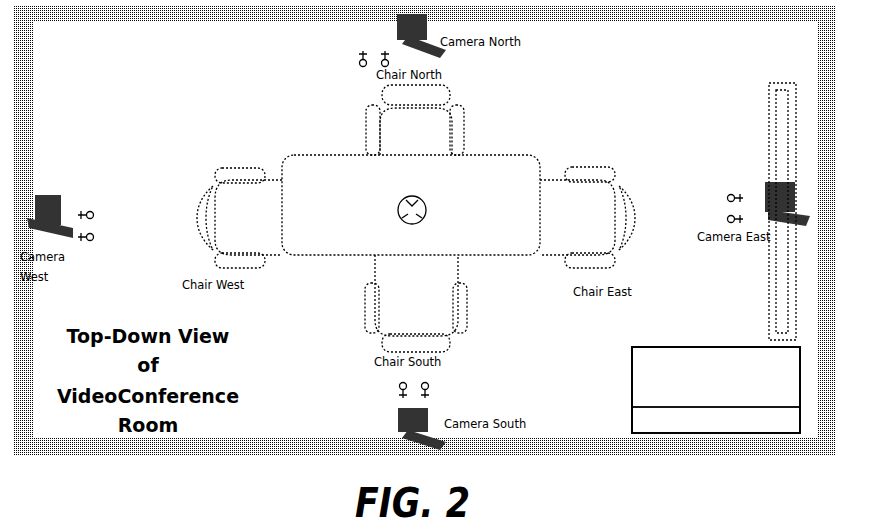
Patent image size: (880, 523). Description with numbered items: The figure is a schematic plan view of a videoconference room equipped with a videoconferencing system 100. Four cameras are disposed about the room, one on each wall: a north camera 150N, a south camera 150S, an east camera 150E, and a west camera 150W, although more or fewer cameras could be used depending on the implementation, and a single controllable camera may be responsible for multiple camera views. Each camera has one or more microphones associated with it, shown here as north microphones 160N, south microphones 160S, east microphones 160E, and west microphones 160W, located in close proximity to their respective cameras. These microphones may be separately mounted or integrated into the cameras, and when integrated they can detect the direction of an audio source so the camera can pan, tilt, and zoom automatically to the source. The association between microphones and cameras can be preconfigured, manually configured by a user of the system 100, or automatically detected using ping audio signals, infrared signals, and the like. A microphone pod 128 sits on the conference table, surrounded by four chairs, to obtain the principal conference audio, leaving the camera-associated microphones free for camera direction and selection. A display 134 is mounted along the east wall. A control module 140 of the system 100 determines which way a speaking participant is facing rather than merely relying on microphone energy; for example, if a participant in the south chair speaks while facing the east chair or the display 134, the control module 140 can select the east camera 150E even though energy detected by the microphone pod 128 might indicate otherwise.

The videoconferencing system 100 is at (632, 353).
The microphone pod 128 is at (398, 210).
The display 134 is at (770, 302).
The control module 140 is at (632, 412).
The north camera 150N is at (400, 38).
The south camera 150S is at (402, 418).
The east camera 150E is at (770, 185).
The west camera 150W is at (50, 195).
The north microphones 160N is at (358, 63).
The south microphones 160S is at (399, 387).
The east microphones 160E is at (728, 196).
The west microphones 160W is at (91, 212).